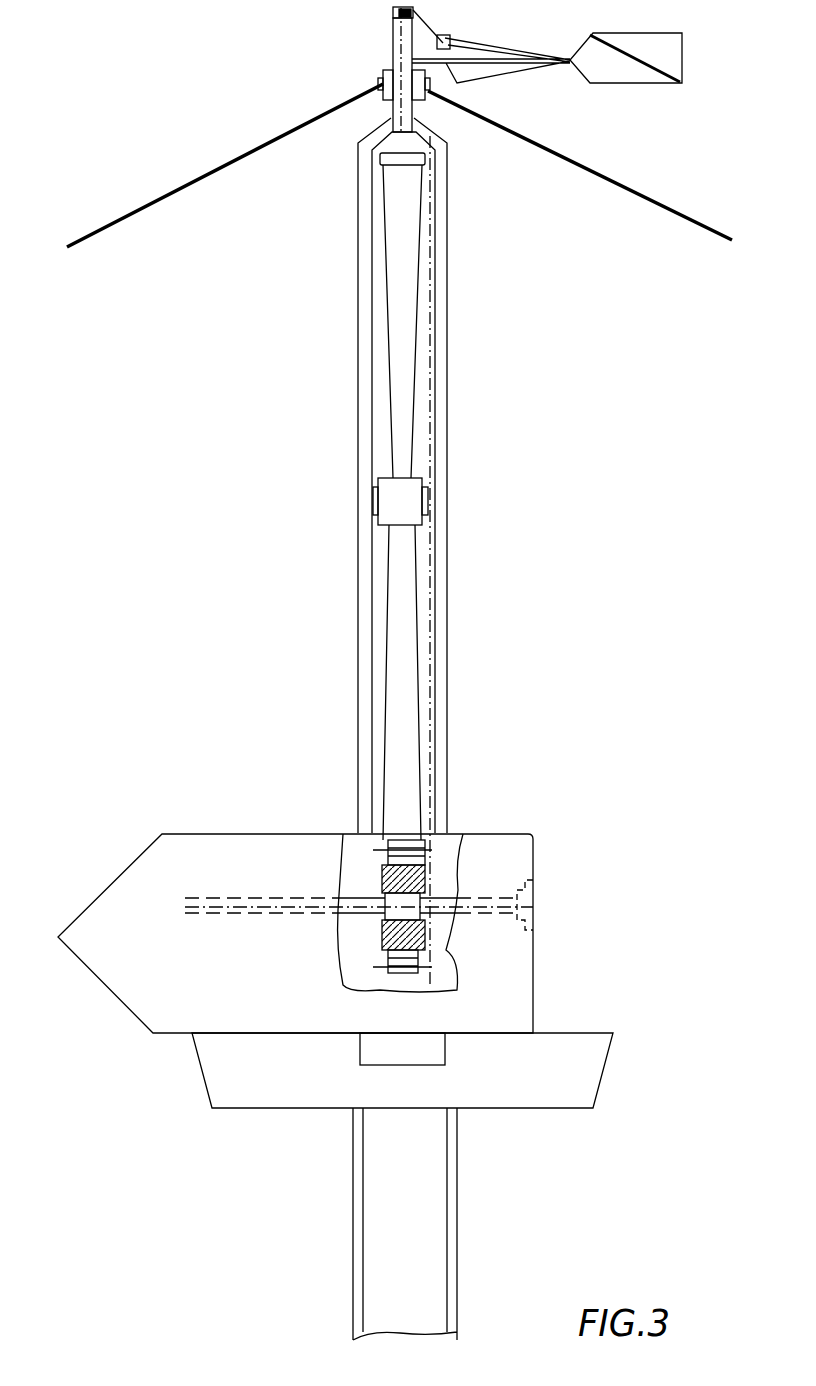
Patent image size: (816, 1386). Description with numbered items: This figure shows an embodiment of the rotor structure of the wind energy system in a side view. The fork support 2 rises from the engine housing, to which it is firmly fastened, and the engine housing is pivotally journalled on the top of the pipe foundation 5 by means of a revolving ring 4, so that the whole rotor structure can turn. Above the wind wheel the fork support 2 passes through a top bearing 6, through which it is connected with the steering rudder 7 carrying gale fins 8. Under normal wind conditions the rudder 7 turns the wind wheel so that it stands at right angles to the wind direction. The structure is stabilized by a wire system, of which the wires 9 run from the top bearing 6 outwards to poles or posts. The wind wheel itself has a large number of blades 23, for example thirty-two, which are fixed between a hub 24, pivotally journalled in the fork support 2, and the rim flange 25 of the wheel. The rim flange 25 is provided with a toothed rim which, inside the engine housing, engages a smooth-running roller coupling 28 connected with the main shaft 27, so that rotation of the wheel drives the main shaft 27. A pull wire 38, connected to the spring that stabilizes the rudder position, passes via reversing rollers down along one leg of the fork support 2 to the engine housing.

The fork support 2 is at (436, 425).
The revolving ring 4 is at (433, 1052).
The pipe foundation 5 is at (450, 1203).
The top bearing 6 is at (380, 78).
The steering rudder 7 is at (652, 28).
The gale fins 8 is at (640, 67).
The wires 9 is at (172, 190).
The blades 23 is at (400, 433).
The hub 24 is at (407, 513).
The rim flange 25 is at (405, 162).
The main shaft 27 is at (497, 897).
The roller coupling 28 is at (425, 862).
The pull wire 38 is at (397, 40).